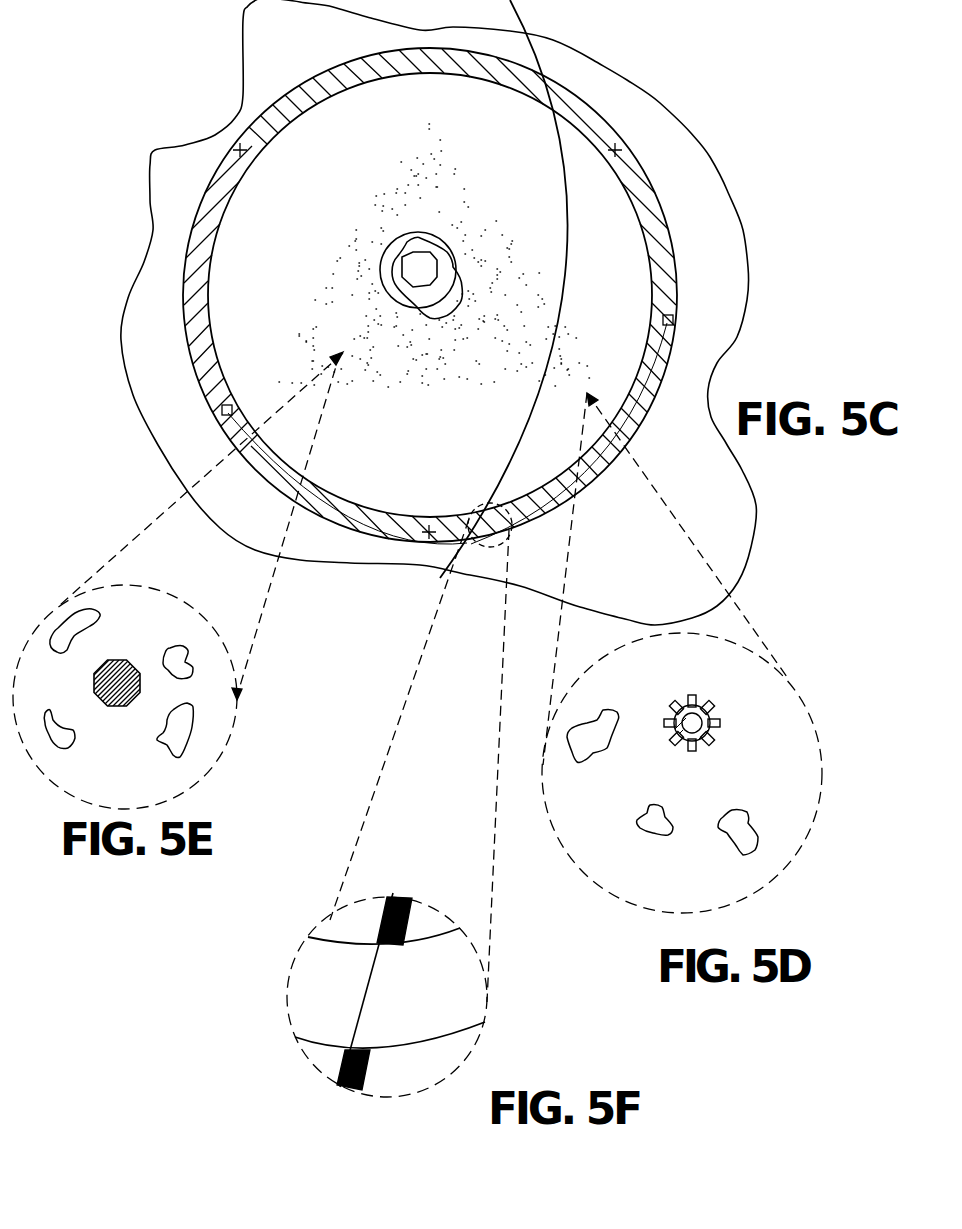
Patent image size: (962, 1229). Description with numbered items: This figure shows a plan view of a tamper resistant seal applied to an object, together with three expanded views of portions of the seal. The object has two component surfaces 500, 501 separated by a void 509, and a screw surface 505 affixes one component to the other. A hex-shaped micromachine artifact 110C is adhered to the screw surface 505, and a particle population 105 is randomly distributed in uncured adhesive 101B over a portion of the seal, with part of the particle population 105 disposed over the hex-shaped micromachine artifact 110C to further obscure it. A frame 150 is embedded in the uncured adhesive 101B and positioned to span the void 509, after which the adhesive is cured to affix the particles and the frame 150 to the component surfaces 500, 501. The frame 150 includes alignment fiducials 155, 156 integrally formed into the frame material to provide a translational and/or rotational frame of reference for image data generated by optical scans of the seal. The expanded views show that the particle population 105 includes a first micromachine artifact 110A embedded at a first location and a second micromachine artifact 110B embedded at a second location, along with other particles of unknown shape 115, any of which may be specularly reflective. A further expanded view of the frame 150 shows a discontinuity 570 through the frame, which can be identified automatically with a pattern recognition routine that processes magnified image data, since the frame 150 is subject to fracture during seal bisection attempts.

In FIG. 5C, the uncured adhesive 101B is at (243, 88).
In FIG. 5C, the particle population 105 is at (578, 340).
In FIG. 5C, the micromachine artifact 110A is at (460, 313).
In FIG. 5D, the micromachine artifact 110A is at (717, 710).
In FIG. 5E, the micromachine artifact 110B is at (117, 665).
In FIG. 5C, the hex-shaped micromachine artifact 110C is at (427, 267).
In FIG. 5E, the particles of unknown shape 115 is at (73, 622).
In FIG. 5D, the particles of unknown shape 115 is at (595, 750).
In FIG. 5C, the frame 150 is at (183, 305).
In FIG. 5F, the frame 150 is at (345, 1006).
In FIG. 5C, the alignment fiducial 155 is at (236, 146).
In FIG. 5C, the alignment fiducial 156 is at (673, 322).
In FIG. 5C, the component surface 500 is at (478, 471).
In FIG. 5C, the component surface 501 is at (565, 471).
In FIG. 5C, the screw surface 505 is at (420, 232).
In FIG. 5C, the void 509 is at (490, 549).
In FIG. 5F, the void 509 is at (393, 892).
In FIG. 5F, the discontinuity 570 is at (380, 993).